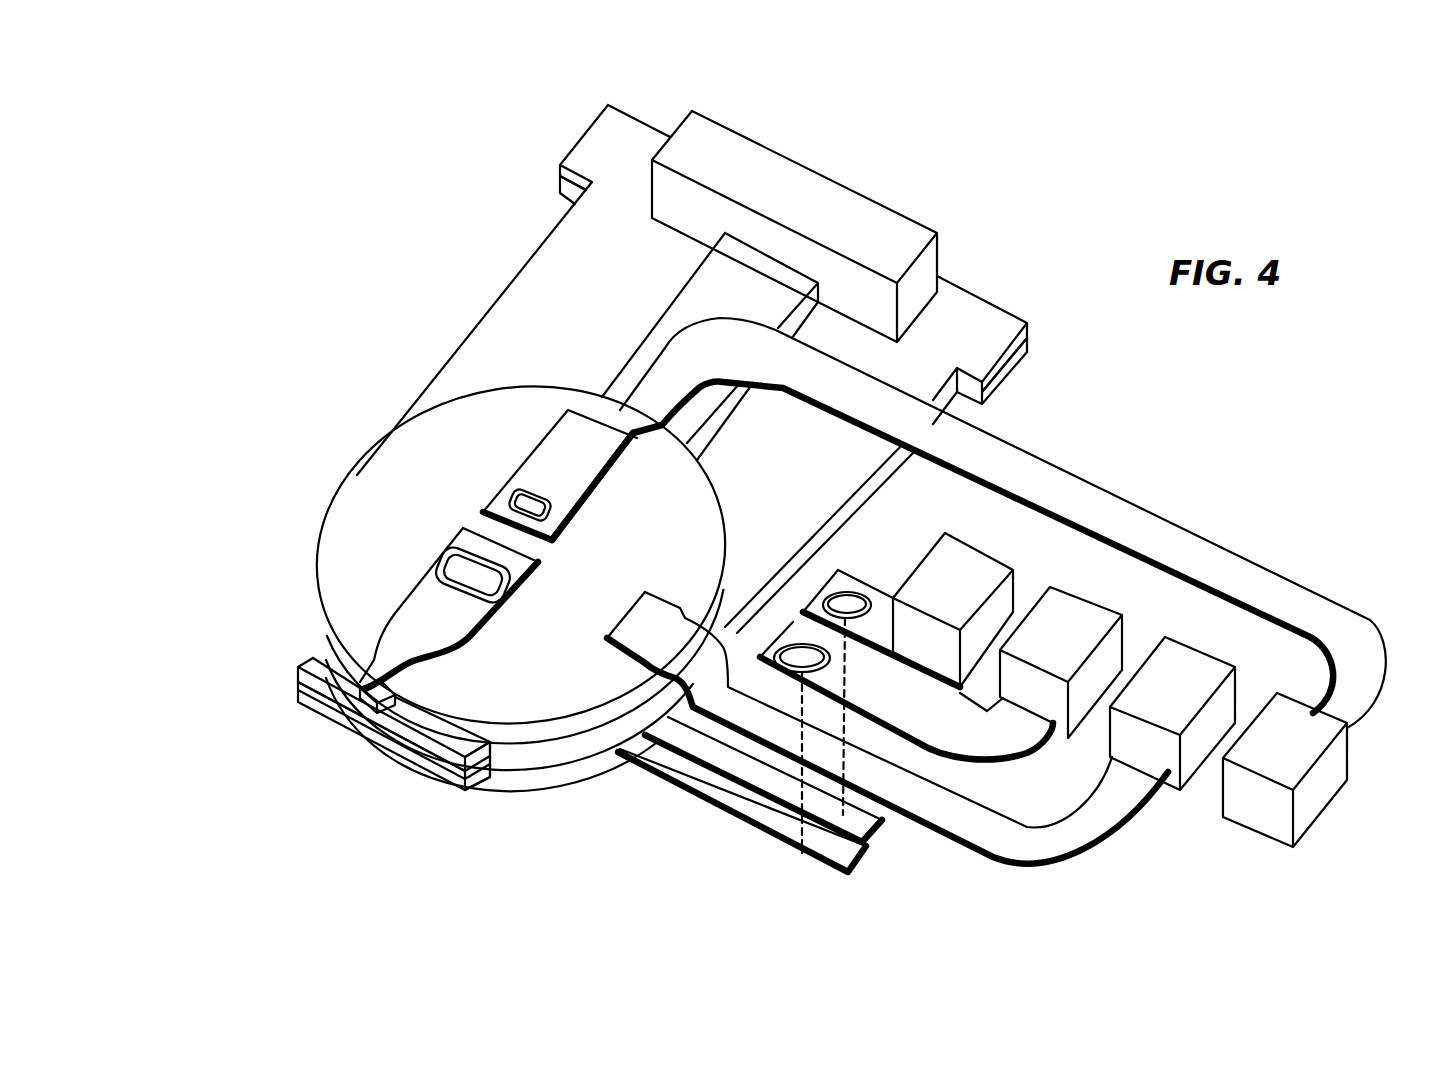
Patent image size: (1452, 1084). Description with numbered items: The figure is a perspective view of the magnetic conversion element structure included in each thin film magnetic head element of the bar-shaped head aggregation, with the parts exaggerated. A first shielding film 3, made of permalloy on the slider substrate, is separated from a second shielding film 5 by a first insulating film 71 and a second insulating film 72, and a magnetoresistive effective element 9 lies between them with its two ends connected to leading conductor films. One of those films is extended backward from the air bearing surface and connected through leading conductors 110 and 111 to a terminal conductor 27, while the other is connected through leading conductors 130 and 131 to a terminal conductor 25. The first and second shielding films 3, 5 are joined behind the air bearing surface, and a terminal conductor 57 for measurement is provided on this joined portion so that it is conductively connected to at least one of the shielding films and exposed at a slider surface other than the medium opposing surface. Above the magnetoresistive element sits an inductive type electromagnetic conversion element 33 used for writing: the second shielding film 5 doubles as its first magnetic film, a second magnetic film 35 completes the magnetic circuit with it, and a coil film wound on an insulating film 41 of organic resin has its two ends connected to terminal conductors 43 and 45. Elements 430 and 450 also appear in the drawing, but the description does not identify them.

The first shielding film 3 is at (1027, 357).
The second shielding film 5 is at (686, 315).
The magnetoresistive effective element 9 is at (372, 730).
The terminal conductor 25 is at (977, 597).
The terminal conductor 27 is at (1076, 642).
The inductive type electromagnetic conversion element 33 is at (349, 437).
The second magnetic film 35 is at (400, 607).
The insulating film 41 is at (507, 430).
The terminal conductor 43 is at (1195, 705).
The terminal conductor 45 is at (1268, 818).
The terminal conductor for measurement 57 is at (857, 215).
The first insulating film 71 is at (1005, 322).
The second insulating film 72 is at (1005, 322).
The leading conductor 110 is at (985, 740).
The leading conductor 111 is at (802, 853).
The leading conductor 130 is at (828, 590).
The leading conductor 131 is at (843, 815).
The wiring lead 430 is at (1118, 812).
The wiring lead 450 is at (1230, 556).